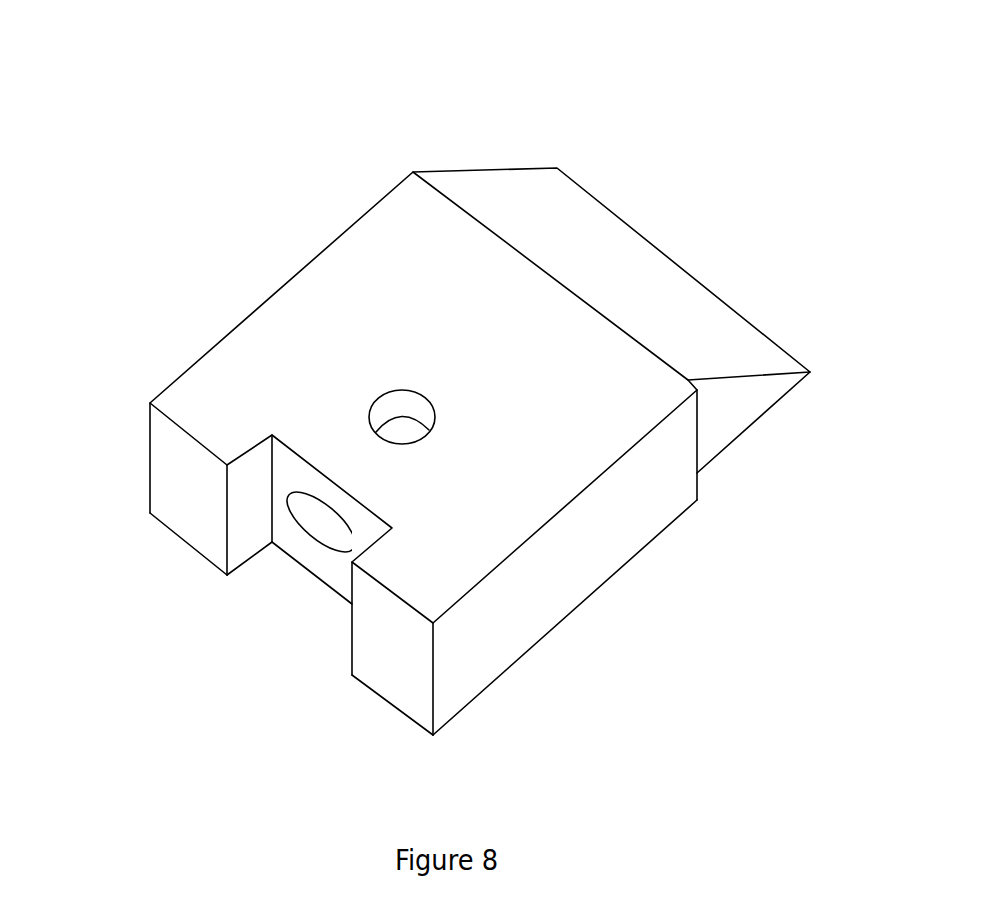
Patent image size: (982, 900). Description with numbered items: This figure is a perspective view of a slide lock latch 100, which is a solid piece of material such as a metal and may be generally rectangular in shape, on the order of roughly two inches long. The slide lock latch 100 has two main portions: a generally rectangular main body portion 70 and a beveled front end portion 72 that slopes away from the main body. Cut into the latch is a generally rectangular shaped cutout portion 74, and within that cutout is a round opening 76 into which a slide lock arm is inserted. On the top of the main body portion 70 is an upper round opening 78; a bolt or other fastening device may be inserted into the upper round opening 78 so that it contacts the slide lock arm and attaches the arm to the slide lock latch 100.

The slide lock latch 100 is at (435, 372).
The main body portion 70 is at (353, 327).
The beveled front end portion 72 is at (643, 278).
The cutout portion 74 is at (250, 523).
The round opening 76 is at (340, 533).
The upper round opening 78 is at (403, 425).